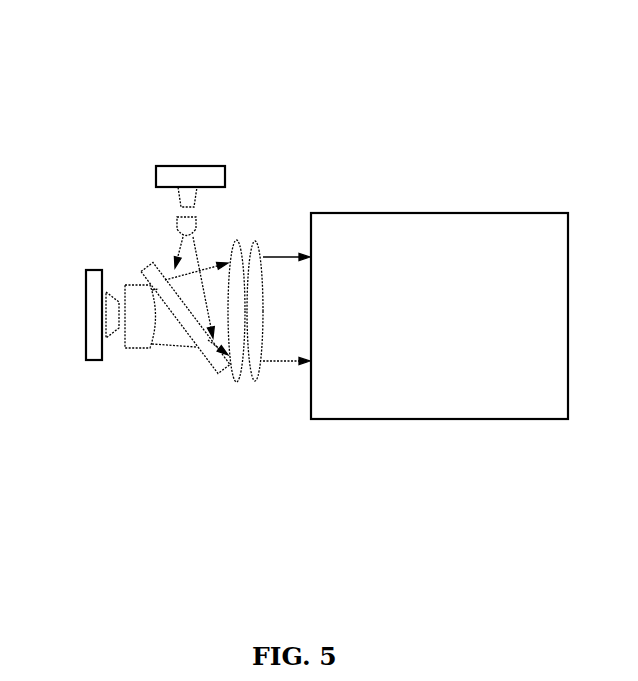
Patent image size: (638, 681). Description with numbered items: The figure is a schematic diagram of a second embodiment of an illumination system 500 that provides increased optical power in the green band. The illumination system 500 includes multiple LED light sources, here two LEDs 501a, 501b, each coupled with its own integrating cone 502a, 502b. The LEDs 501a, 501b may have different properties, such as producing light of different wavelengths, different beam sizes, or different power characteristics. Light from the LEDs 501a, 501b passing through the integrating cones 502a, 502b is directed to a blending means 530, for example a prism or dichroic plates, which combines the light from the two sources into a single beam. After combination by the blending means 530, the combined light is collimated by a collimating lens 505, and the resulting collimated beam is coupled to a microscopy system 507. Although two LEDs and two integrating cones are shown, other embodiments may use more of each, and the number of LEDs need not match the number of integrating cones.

The illumination system 500 is at (310, 59).
The LED 501a is at (168, 167).
The integrating cone 502a is at (178, 195).
The LED 501b is at (95, 373).
The integrating cone 502b is at (112, 334).
The blending means 530 is at (206, 389).
The collimating lens 505 is at (255, 396).
The microscopy system 507 is at (366, 433).